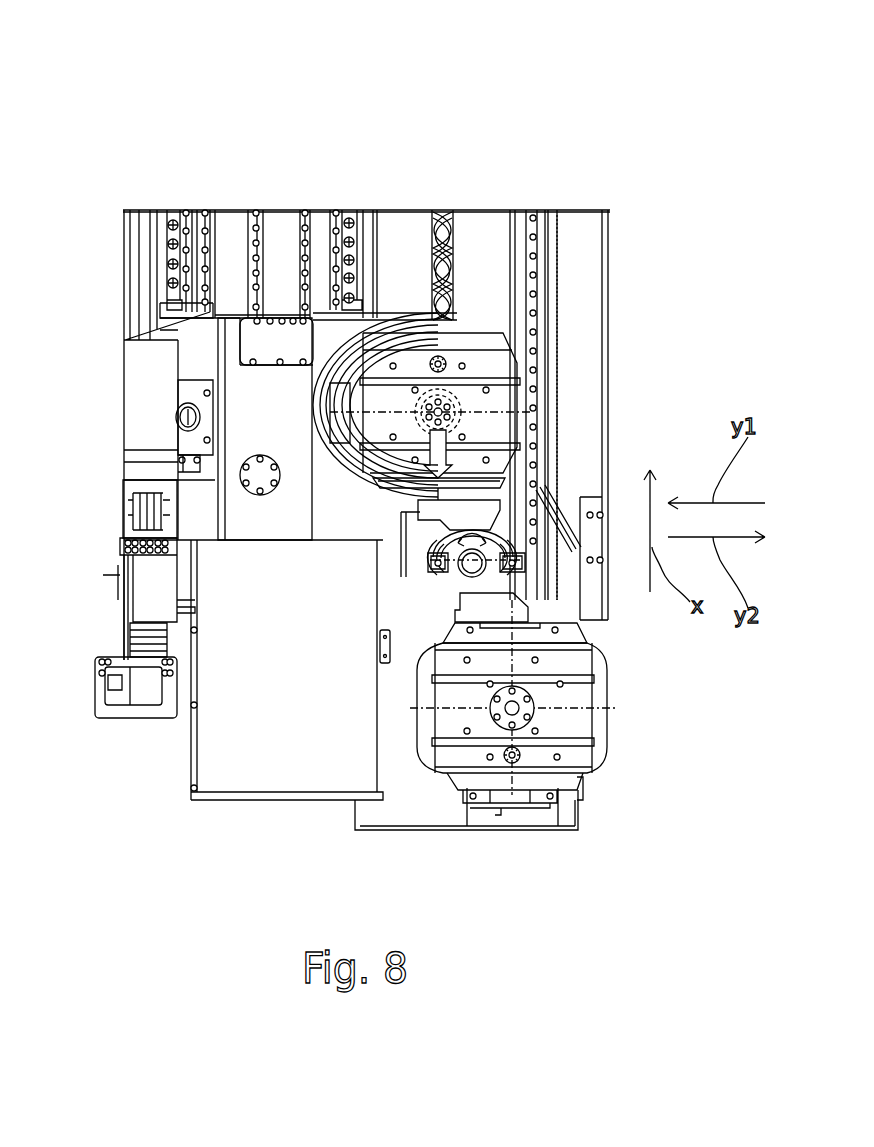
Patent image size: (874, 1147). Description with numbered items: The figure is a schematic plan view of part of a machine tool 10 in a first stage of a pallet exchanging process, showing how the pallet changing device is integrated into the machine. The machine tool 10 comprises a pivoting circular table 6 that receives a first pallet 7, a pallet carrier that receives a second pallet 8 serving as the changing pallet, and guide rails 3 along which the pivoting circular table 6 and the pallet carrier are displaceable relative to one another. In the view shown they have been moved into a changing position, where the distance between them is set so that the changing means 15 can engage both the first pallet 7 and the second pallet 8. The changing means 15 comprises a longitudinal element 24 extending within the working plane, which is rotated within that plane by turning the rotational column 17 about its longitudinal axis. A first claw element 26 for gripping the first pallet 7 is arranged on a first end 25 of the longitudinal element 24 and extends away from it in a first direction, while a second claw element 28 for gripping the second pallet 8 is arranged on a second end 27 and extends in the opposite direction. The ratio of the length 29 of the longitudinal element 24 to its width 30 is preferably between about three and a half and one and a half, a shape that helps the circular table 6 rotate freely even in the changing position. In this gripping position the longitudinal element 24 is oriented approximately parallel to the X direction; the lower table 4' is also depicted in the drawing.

The machine tool 10 is at (575, 90).
The guide rails 3 is at (330, 215).
The pivoting circular table 6 is at (372, 302).
The first pallet 7 is at (457, 347).
The first end 25 is at (462, 501).
The length 29 is at (560, 545).
The first connecting element (claw element) 26 is at (335, 498).
The width 30 is at (445, 543).
The rotational column 17 is at (462, 575).
The longitudinal element 24 is at (425, 568).
The changing means 15 is at (385, 618).
The second end 27 is at (479, 620).
The second connecting element (claw element) 28 is at (523, 610).
The rotary table 4' is at (544, 697).
The second pallet 8 is at (453, 757).